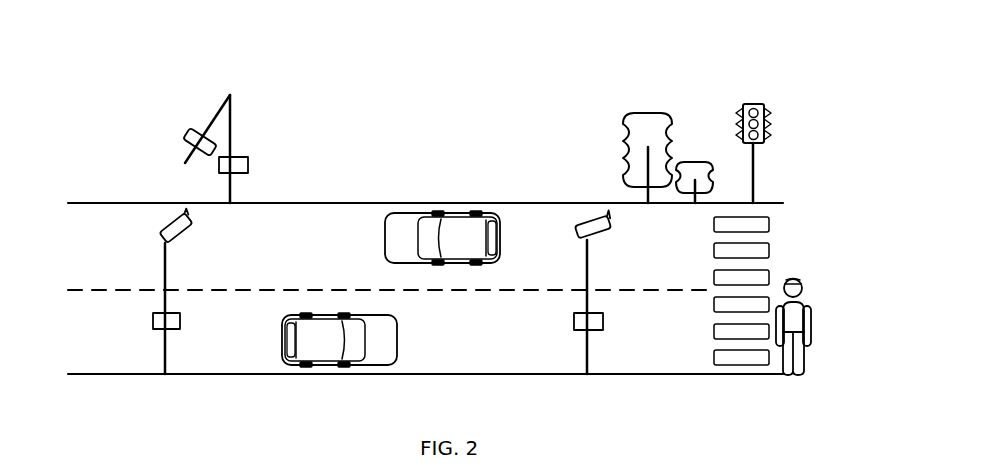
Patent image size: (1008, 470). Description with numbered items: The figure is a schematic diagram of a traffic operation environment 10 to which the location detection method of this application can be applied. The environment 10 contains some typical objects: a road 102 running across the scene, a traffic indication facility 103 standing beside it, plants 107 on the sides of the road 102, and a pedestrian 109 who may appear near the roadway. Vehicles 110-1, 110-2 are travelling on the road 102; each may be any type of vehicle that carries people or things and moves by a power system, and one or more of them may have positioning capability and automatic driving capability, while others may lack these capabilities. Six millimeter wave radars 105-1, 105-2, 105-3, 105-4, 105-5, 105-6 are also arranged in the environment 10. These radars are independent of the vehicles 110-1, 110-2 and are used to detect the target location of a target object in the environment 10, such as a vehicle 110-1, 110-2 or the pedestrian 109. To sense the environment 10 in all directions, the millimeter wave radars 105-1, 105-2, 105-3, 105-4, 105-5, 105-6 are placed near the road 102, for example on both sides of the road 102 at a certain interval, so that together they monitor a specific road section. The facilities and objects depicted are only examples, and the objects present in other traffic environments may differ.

The environment 10 is at (446, 93).
The road 102 is at (110, 237).
The traffic indication facility 103 is at (770, 105).
The millimeter wave radar 105-1 is at (152, 327).
The millimeter wave radar 105-2 is at (195, 216).
The millimeter wave radar 105-3 is at (185, 137).
The millimeter wave radar 105-4 is at (248, 165).
The millimeter wave radar 105-5 is at (610, 227).
The millimeter wave radar 105-6 is at (603, 326).
The plants 107 is at (647, 113).
The pedestrian 109 is at (797, 281).
The vehicle 110-1 is at (397, 338).
The vehicle 110-2 is at (386, 233).